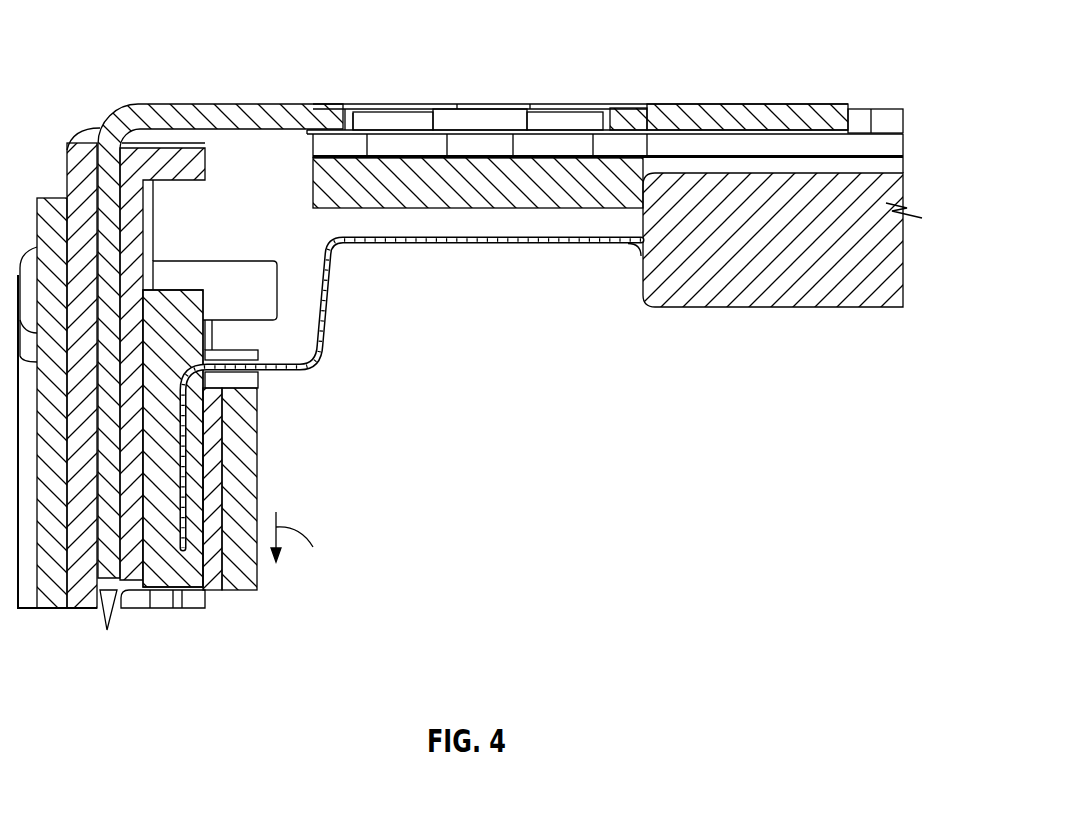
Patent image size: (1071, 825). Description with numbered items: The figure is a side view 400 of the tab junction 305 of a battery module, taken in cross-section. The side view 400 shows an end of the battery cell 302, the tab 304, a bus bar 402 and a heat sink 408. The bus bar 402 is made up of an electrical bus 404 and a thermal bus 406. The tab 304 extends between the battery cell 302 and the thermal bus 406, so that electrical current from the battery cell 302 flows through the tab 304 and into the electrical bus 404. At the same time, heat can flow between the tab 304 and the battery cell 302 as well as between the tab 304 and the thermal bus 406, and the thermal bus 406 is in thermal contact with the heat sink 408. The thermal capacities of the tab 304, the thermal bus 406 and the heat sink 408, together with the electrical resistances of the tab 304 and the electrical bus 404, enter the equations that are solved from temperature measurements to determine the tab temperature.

The side view 400 is at (860, 53).
The battery cell 302 is at (688, 287).
The tab 304 is at (377, 246).
The tab junction 305 is at (520, 407).
The bus bar 402 is at (236, 330).
The electrical bus 404 is at (233, 570).
The thermal bus 406 is at (163, 575).
The heat sink 408 is at (75, 600).